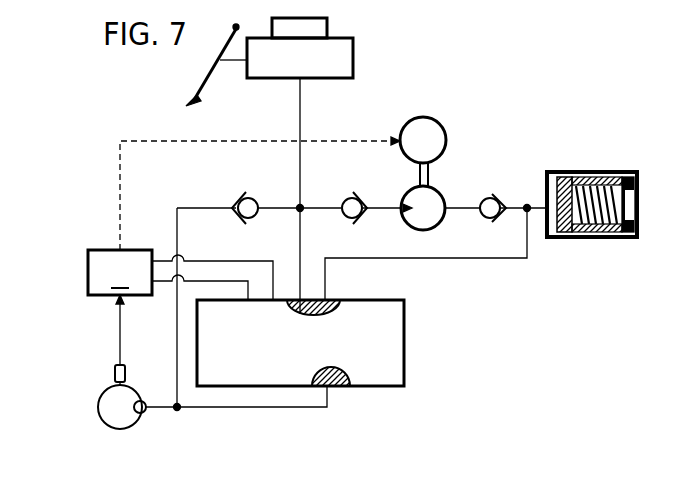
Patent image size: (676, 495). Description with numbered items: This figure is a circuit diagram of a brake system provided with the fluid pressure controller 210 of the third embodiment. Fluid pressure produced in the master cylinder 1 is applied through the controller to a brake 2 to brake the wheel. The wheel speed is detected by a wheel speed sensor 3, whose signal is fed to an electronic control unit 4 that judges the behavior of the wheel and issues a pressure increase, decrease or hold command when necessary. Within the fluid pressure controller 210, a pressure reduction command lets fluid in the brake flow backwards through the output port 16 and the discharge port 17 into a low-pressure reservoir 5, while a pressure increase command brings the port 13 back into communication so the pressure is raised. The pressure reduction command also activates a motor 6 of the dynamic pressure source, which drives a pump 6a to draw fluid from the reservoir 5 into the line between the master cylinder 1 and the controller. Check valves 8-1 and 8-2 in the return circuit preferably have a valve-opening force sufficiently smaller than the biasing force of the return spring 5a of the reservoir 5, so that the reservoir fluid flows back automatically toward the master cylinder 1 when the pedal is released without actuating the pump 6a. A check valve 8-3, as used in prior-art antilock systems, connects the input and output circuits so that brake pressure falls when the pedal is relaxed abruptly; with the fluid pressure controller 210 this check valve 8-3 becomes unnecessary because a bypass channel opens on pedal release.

The master cylinder 1 is at (347, 50).
The brake 2 is at (144, 413).
The wheel speed sensor 3 is at (113, 370).
The electronic control unit 4 is at (120, 272).
The low-pressure reservoir 5 is at (562, 172).
The return spring 5a is at (598, 237).
The motor 6 is at (438, 120).
The pump 6a is at (433, 214).
The check valve 8-1 is at (491, 197).
The check valve 8-2 is at (357, 197).
The check valve 8-3 is at (240, 198).
The port 13 is at (297, 315).
The output port 16 is at (332, 386).
The discharge port 17 is at (327, 297).
The fluid pressure controller 210 is at (393, 360).